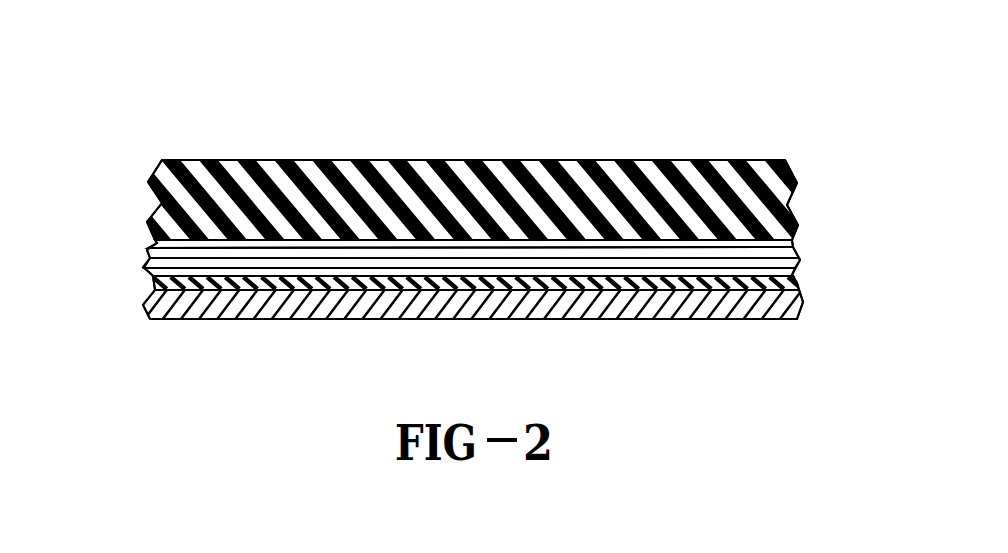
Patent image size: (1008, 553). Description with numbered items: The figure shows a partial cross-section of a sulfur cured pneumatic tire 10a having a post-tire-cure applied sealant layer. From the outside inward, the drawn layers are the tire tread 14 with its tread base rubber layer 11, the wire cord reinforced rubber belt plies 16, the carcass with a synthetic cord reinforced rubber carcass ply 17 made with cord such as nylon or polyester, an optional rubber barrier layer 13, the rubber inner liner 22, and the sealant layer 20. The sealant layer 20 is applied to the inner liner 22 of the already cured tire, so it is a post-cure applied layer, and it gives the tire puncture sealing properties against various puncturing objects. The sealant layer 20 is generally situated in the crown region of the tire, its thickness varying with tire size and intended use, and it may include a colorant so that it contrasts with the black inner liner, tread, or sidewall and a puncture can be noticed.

The sulfur cured pneumatic tire 10a is at (660, 104).
The tire tread 14 is at (463, 172).
The tread base rubber layer 11 is at (160, 245).
The wire cord reinforced rubber belt plies 16 is at (723, 253).
The synthetic cord reinforced rubber carcass ply 17 is at (777, 263).
The rubber barrier layer 13 is at (150, 275).
The rubber inner liner 22 is at (430, 288).
The sealant layer 20 is at (673, 305).